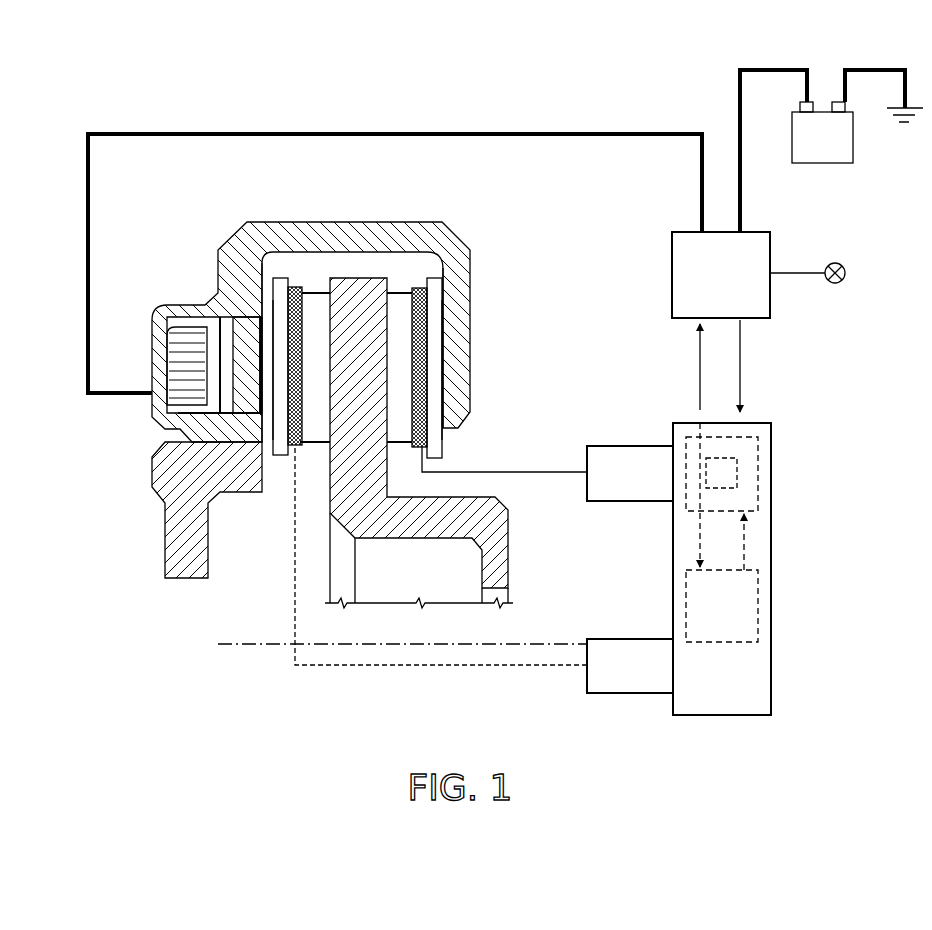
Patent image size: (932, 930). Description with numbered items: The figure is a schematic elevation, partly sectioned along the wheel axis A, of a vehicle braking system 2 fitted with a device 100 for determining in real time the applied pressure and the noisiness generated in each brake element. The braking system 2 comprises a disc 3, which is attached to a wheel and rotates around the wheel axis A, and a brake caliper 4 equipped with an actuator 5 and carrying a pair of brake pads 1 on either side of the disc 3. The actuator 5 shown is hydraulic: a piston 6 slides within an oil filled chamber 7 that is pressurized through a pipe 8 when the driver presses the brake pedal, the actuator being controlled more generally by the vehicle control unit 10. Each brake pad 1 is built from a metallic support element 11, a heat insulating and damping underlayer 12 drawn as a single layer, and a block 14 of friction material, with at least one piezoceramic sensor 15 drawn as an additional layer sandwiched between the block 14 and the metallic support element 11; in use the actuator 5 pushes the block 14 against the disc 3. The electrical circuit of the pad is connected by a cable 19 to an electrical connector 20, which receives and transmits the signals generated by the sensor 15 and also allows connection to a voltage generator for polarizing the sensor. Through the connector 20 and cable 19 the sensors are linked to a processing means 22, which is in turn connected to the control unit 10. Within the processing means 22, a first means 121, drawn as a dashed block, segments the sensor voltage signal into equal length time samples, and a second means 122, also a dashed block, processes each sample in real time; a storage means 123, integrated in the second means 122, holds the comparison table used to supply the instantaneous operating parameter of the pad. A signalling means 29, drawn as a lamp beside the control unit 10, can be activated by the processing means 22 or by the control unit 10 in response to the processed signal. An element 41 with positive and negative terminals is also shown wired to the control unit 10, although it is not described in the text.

The brake pad 1 is at (313, 288).
The braking system 2 is at (165, 682).
The disc 3 is at (375, 365).
The brake caliper 4 is at (470, 272).
The actuator 5 is at (133, 426).
The piston 6 is at (247, 337).
The oil filled chamber 7 is at (173, 350).
The pipe 8 is at (101, 398).
The vehicle control unit 10 is at (678, 254).
The metallic support element 11 is at (250, 278).
The underlayer 12 is at (280, 277).
The block of friction material 14 is at (321, 292).
The piezoceramic sensor 15 is at (296, 286).
The cable 19 is at (540, 477).
The electrical connector 20 is at (623, 494).
The processing means 22 is at (750, 670).
The signalling means 29 is at (845, 265).
The battery 41 is at (855, 152).
The device 100 is at (803, 452).
The first means 121 is at (773, 592).
The second means 122 is at (760, 472).
The storage means 123 is at (703, 458).
The wheel axis A is at (222, 648).